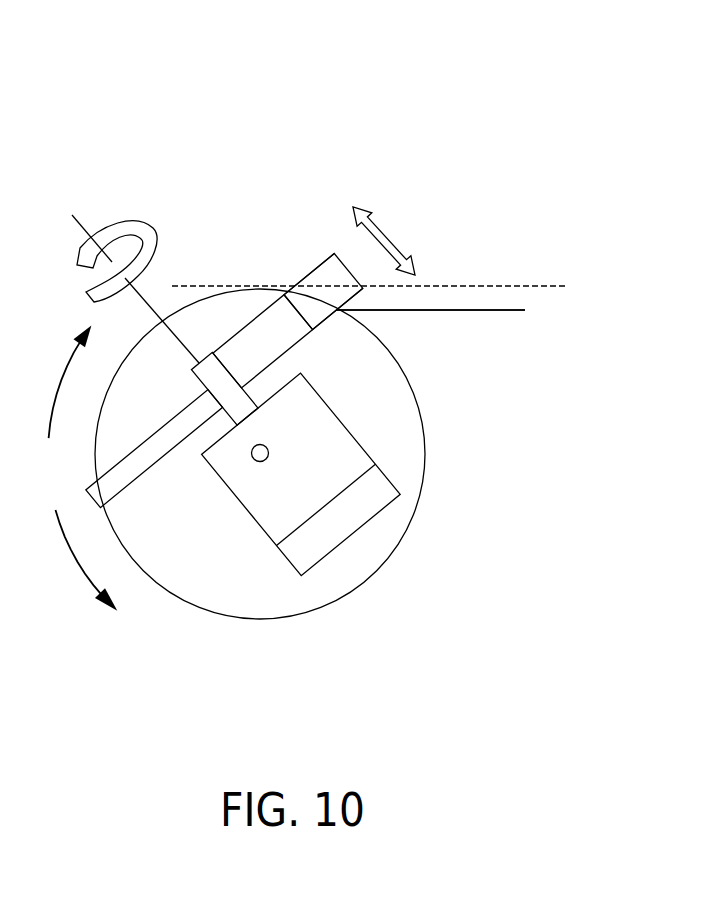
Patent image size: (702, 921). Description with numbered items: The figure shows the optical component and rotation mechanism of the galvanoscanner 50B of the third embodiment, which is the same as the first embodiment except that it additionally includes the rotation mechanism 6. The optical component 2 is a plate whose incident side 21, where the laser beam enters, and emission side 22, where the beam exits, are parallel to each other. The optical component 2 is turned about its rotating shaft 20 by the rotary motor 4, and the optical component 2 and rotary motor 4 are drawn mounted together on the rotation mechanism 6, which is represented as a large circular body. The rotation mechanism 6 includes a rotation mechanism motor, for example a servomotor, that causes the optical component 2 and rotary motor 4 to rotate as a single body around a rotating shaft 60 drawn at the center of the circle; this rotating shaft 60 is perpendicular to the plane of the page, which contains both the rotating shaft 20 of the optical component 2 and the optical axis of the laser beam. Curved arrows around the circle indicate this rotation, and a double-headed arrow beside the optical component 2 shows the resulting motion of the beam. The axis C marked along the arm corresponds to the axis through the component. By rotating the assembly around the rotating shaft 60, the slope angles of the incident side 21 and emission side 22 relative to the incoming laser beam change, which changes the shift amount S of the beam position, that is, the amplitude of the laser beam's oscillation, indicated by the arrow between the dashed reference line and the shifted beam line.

The galvanoscanner 50B is at (326, 100).
The optical component 2 is at (328, 272).
The incident side 21 is at (294, 262).
The emission side 22 is at (344, 326).
The rotating shaft 20 is at (205, 368).
The arm (axis C) C is at (265, 330).
The rotary motor 4 is at (345, 452).
The rotation mechanism 6 is at (301, 637).
The rotating shaft 60 is at (256, 462).
The shift amount S is at (546, 288).